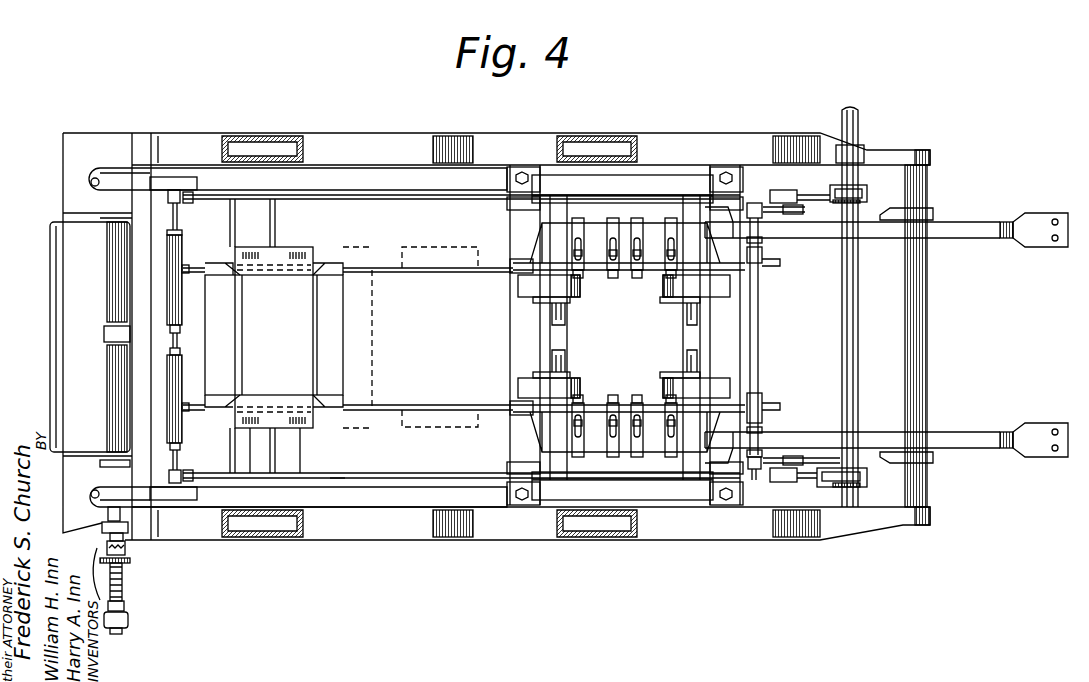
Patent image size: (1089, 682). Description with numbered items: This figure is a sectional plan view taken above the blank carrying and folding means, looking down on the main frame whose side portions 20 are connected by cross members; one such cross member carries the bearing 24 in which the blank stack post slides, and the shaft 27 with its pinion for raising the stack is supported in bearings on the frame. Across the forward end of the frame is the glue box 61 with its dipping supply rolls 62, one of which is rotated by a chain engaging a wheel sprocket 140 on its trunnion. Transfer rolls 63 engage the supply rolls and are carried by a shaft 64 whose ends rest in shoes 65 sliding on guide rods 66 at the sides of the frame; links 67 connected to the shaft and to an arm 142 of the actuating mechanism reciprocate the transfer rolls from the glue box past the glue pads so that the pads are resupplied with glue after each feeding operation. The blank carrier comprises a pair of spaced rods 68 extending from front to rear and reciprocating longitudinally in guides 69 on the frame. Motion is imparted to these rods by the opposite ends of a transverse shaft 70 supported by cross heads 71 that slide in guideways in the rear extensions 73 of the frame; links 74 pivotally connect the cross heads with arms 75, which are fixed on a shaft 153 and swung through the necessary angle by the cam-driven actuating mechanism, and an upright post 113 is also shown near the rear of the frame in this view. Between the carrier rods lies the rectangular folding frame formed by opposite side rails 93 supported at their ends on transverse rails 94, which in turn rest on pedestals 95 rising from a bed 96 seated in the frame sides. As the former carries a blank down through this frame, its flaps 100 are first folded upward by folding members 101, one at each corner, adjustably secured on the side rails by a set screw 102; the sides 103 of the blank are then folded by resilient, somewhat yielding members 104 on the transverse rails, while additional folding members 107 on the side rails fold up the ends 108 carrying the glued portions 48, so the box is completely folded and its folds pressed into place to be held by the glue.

The side portions 20 is at (502, 140).
The bearing 24 is at (338, 470).
The shaft 27 is at (223, 447).
The glued portions 48 is at (295, 418).
The glue box 61 is at (60, 282).
The dipping supply rolls 62 is at (110, 248).
The transfer rolls 63 is at (168, 385).
The shaft 64 is at (188, 213).
The shoes 65 is at (181, 178).
The guide rods 66 is at (325, 180).
The links 67 is at (371, 198).
The rods or bars 68 is at (358, 266).
The guides or bearings 69 is at (520, 415).
The transverse shaft 70 is at (760, 320).
The cross heads 71 is at (764, 242).
The rear extensions 73 is at (966, 229).
The links 74 is at (766, 204).
The arms 75 is at (881, 209).
The side rails 93 is at (657, 260).
The transverse rails 94 is at (686, 345).
The pedestals 95 is at (710, 498).
The bed 96 is at (733, 353).
The flaps 100 is at (341, 397).
The folding members 101 is at (590, 273).
The set screw 102 is at (583, 240).
The sides 103 is at (341, 352).
The folding members 104 is at (663, 382).
The folding members 107 is at (633, 277).
The ends 108 is at (306, 430).
The vertical post 113 is at (858, 116).
The wheel sprocket 140 is at (130, 560).
The arm 142 is at (813, 191).
The shaft 153 is at (920, 268).